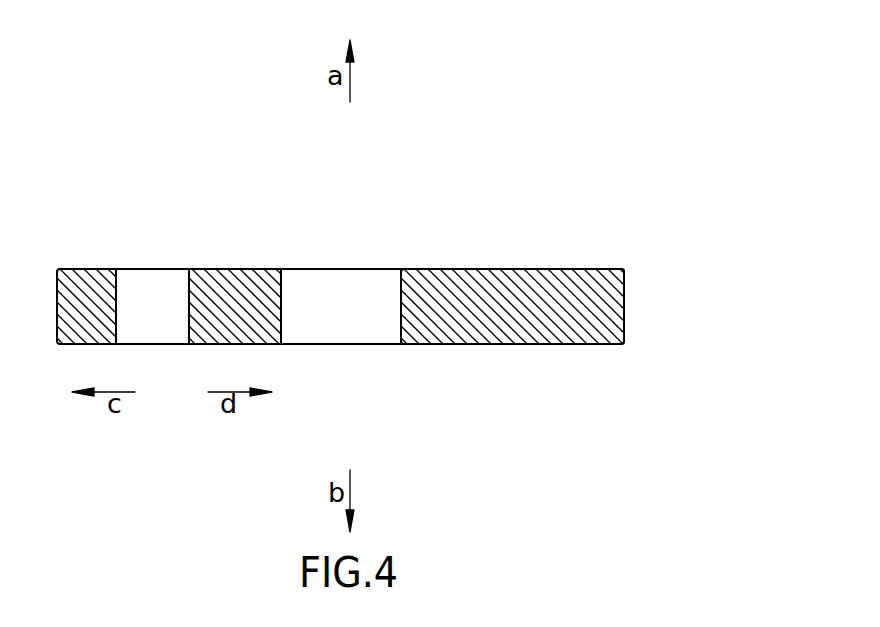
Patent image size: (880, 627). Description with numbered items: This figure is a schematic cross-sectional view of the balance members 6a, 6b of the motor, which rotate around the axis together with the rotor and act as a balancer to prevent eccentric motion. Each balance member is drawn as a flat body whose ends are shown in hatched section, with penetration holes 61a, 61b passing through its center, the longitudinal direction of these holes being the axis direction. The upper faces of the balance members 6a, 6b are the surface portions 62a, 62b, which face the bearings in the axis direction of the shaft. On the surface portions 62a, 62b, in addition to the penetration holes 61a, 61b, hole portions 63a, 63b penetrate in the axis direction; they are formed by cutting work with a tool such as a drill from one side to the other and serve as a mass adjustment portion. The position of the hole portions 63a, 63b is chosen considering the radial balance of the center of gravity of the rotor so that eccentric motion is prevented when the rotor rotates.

The balance member 6a is at (381, 223).
The balance member 6b is at (381, 223).
The penetration hole 61a is at (341, 258).
The penetration hole 61b is at (342, 298).
The surface portion 62a is at (513, 252).
The surface portion 62b is at (510, 268).
The hole portion 63a is at (91, 259).
The hole portion 63b is at (116, 307).